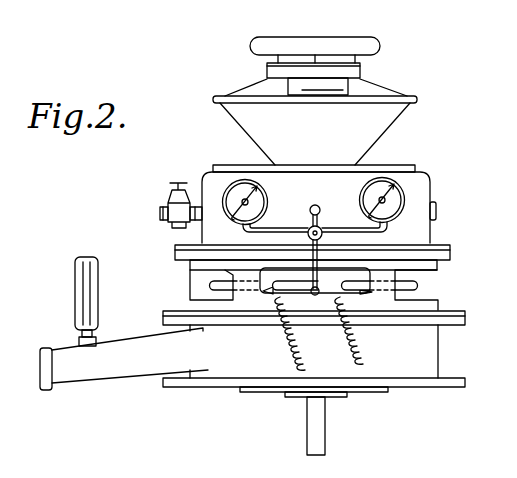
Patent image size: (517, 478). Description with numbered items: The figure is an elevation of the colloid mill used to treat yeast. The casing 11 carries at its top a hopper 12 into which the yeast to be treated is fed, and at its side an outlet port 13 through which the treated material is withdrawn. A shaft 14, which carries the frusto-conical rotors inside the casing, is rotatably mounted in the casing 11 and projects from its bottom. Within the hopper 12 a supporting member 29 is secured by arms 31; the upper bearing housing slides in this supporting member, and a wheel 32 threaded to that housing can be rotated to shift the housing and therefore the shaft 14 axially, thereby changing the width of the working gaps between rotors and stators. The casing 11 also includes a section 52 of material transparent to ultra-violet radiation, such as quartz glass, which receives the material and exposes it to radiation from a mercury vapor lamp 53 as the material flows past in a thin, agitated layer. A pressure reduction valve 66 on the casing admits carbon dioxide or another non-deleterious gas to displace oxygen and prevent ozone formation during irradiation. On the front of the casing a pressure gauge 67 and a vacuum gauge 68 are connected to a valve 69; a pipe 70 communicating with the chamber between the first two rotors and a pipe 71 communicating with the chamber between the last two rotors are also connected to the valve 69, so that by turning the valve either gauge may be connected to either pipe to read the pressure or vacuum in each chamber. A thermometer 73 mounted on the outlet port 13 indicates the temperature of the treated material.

The casing 11 is at (432, 232).
The hopper 12 is at (372, 128).
The outlet port 13 is at (74, 368).
The shaft 14 is at (326, 431).
The supporting member 29 is at (340, 89).
The arms 31 is at (242, 89).
The wheel 32 is at (373, 39).
The section of material transparent to ultra-violet radiation 52 is at (400, 273).
The mercury vapor lamp 53 is at (412, 285).
The pressure reduction valve 66 is at (175, 212).
The pressure gauge 67 is at (222, 192).
The vacuum gauge 68 is at (405, 195).
The valve 69 is at (319, 226).
The pipe 70 is at (309, 218).
The pipe 71 is at (316, 267).
The thermometer 73 is at (75, 297).